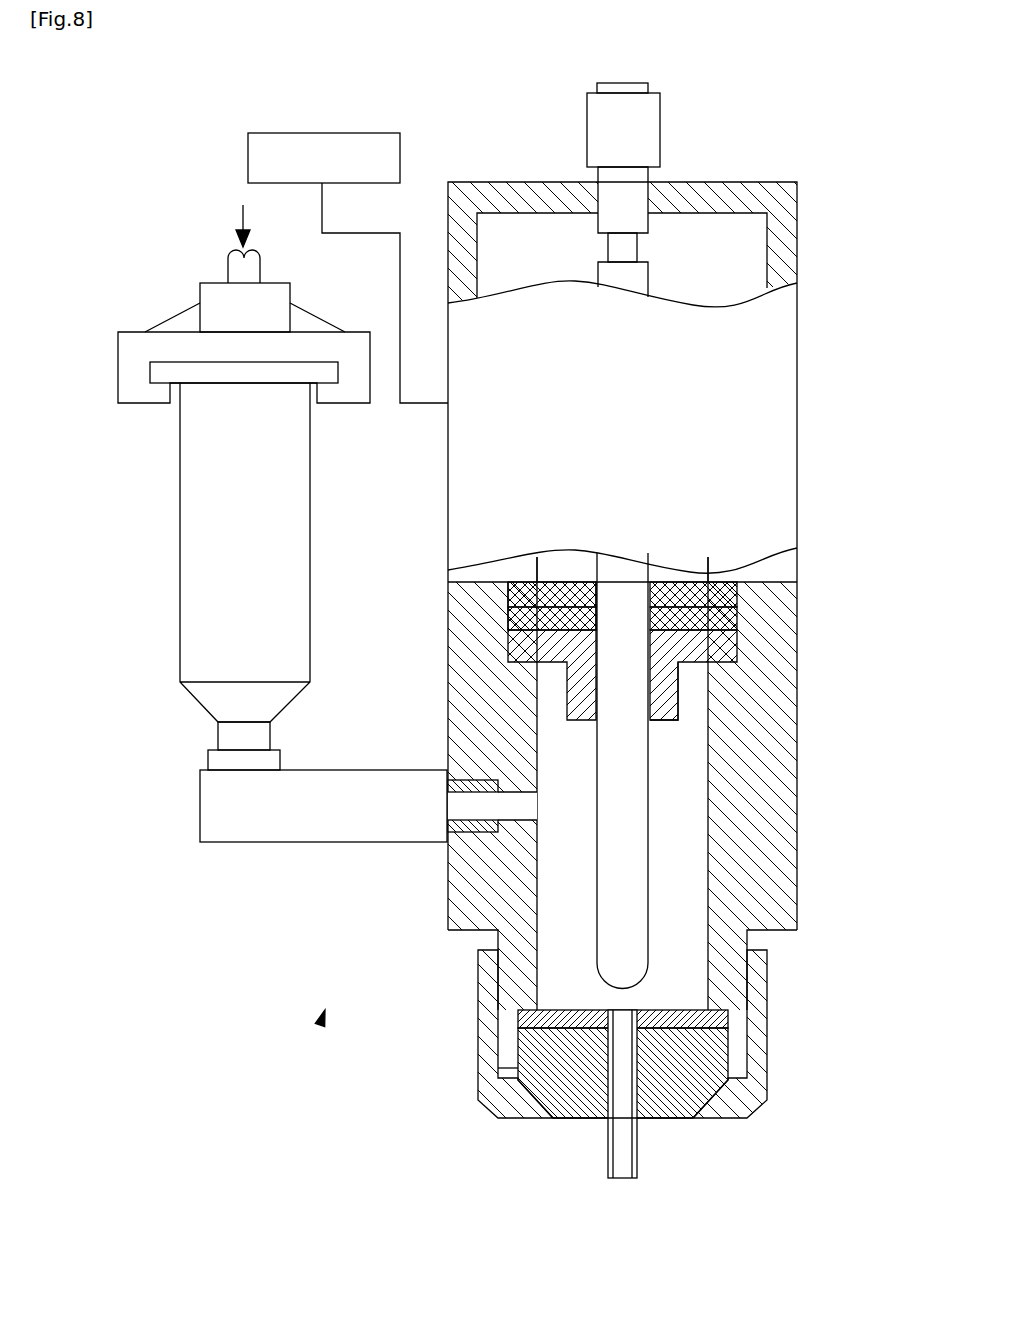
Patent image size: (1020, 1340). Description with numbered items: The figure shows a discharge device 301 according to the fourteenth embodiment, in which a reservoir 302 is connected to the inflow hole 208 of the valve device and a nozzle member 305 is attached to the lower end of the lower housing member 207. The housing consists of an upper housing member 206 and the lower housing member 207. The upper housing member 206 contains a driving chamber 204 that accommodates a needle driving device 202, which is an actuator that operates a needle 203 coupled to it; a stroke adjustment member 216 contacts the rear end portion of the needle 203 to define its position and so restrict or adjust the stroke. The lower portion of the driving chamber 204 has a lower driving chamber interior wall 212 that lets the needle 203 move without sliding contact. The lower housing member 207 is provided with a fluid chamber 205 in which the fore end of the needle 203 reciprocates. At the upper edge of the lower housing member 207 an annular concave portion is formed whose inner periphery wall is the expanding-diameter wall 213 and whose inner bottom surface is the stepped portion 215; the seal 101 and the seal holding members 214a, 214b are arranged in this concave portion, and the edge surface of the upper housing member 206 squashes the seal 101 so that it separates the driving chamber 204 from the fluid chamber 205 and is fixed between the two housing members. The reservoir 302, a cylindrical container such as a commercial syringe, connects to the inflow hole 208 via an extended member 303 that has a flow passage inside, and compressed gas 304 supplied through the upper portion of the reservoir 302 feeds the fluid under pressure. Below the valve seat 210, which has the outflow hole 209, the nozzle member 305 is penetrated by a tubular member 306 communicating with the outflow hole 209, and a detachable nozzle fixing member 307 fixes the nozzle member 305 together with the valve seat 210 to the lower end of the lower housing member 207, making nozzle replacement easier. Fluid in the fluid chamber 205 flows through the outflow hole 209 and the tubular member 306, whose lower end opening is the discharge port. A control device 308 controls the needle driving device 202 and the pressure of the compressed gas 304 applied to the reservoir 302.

The seal 101 is at (769, 691).
The needle driving device 202 is at (666, 382).
The needle 203 is at (746, 459).
The driving chamber 204 is at (740, 691).
The fluid chamber 205 is at (713, 783).
The upper housing member 206 is at (668, 778).
The lower housing member 207 is at (668, 756).
The inflow hole 208 is at (431, 780).
The outflow hole 209 is at (699, 984).
The valve seat 210 is at (688, 1023).
The lower driving chamber interior wall 212 is at (529, 543).
The expanding-diameter wall 213 is at (473, 606).
The seal holding member 214a is at (705, 595).
The seal holding member 214b is at (705, 622).
The stepped portion 215 is at (543, 675).
The stroke adjustment member 216 is at (757, 233).
The discharge device 301 is at (306, 1056).
The reservoir 302 is at (221, 526).
The extended member 303 is at (323, 836).
The compressed gas 304 is at (188, 244).
The nozzle member 305 is at (691, 1087).
The tubular member 306 is at (696, 1108).
The nozzle fixing member 307 is at (671, 1034).
The control device 308 is at (392, 268).